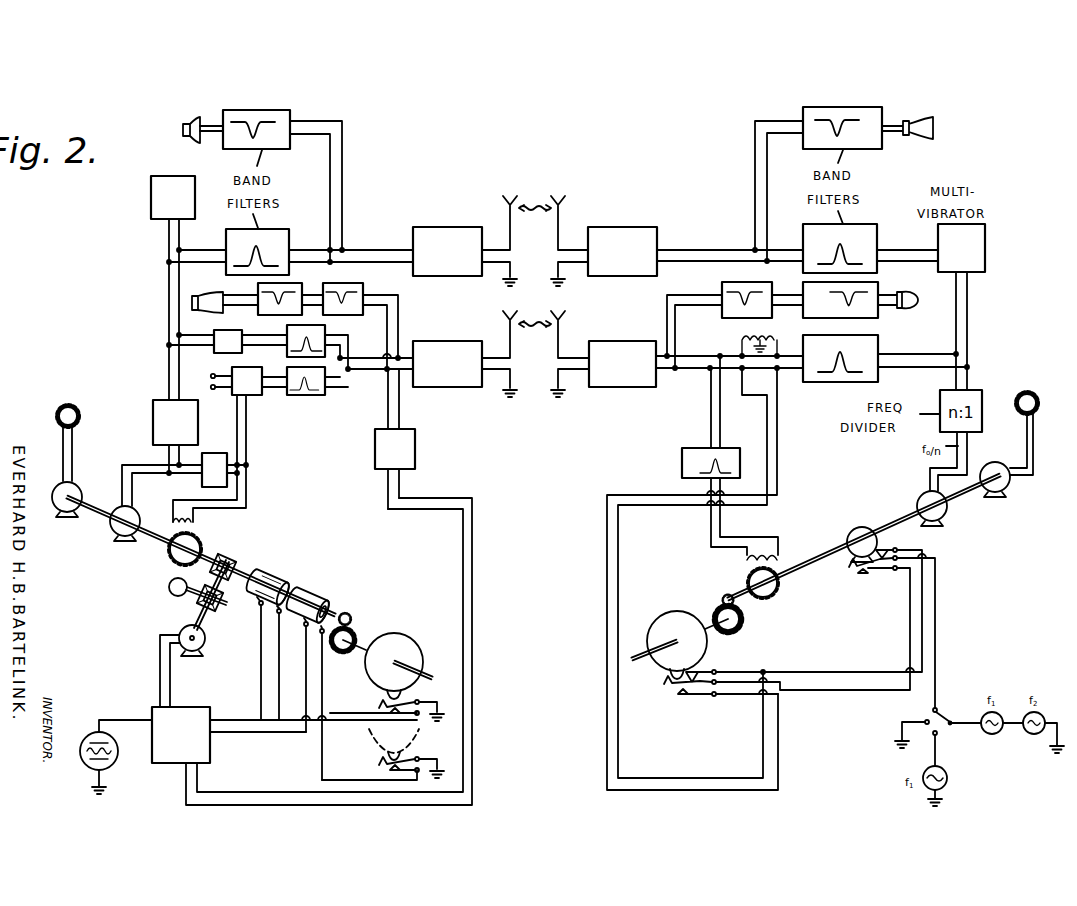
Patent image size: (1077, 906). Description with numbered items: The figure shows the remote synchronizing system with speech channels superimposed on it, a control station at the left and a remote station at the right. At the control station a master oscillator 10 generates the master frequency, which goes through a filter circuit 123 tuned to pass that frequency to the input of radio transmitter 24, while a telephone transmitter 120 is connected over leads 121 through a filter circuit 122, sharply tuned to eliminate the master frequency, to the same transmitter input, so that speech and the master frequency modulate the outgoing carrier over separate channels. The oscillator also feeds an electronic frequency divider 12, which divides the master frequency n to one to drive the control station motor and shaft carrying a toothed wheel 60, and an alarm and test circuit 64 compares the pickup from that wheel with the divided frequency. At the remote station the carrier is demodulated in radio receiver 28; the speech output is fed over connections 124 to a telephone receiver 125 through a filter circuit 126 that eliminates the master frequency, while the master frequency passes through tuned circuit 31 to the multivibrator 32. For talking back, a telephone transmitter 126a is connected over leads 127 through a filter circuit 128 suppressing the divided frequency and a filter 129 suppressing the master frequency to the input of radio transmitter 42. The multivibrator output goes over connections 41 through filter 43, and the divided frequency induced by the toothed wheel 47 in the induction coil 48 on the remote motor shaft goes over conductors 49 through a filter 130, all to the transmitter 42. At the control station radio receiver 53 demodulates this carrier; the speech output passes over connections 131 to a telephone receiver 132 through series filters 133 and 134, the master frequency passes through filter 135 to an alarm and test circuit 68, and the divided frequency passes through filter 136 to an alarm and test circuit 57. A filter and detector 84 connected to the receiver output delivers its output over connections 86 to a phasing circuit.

The master oscillator 10 is at (151, 200).
The electronic frequency divider 12 is at (153, 413).
The radio transmitter 24 is at (434, 227).
The radio receiver 28 is at (612, 227).
The tuned circuit 31 is at (877, 235).
The multivibrator 32 is at (985, 247).
The connections 41 is at (918, 354).
The radio transmitter 42 is at (611, 341).
The filter 43 is at (836, 382).
The toothed wheel 47 is at (780, 593).
The induction coil 48 is at (772, 546).
The conductors 49 is at (717, 525).
The radio receiver 53 is at (435, 341).
The alarm and test circuit 57 is at (252, 395).
The toothed wheel 60 is at (352, 626).
The alarm and test circuit 64 is at (218, 453).
The alarm and test circuit 68 is at (214, 352).
The filter and detector 84 is at (416, 450).
The connections 86 is at (463, 536).
The telephone transmitter 120 is at (199, 108).
The leads 121 is at (342, 182).
The filter circuit 122 is at (258, 110).
The filter circuit 123 is at (226, 240).
The connections 124 is at (755, 175).
The telephone receiver 125 is at (915, 120).
The filter circuit 126 is at (833, 107).
The telephone transmitter 126a is at (916, 306).
The leads 127 is at (675, 330).
The filter circuit 128 is at (866, 318).
The filter 129 is at (722, 282).
The filter 130 is at (682, 462).
The connections 131 is at (393, 316).
The telephone receiver 132 is at (208, 312).
The filter 133 is at (343, 285).
The filter 134 is at (296, 283).
The filter 135 is at (287, 331).
The filter 136 is at (302, 395).